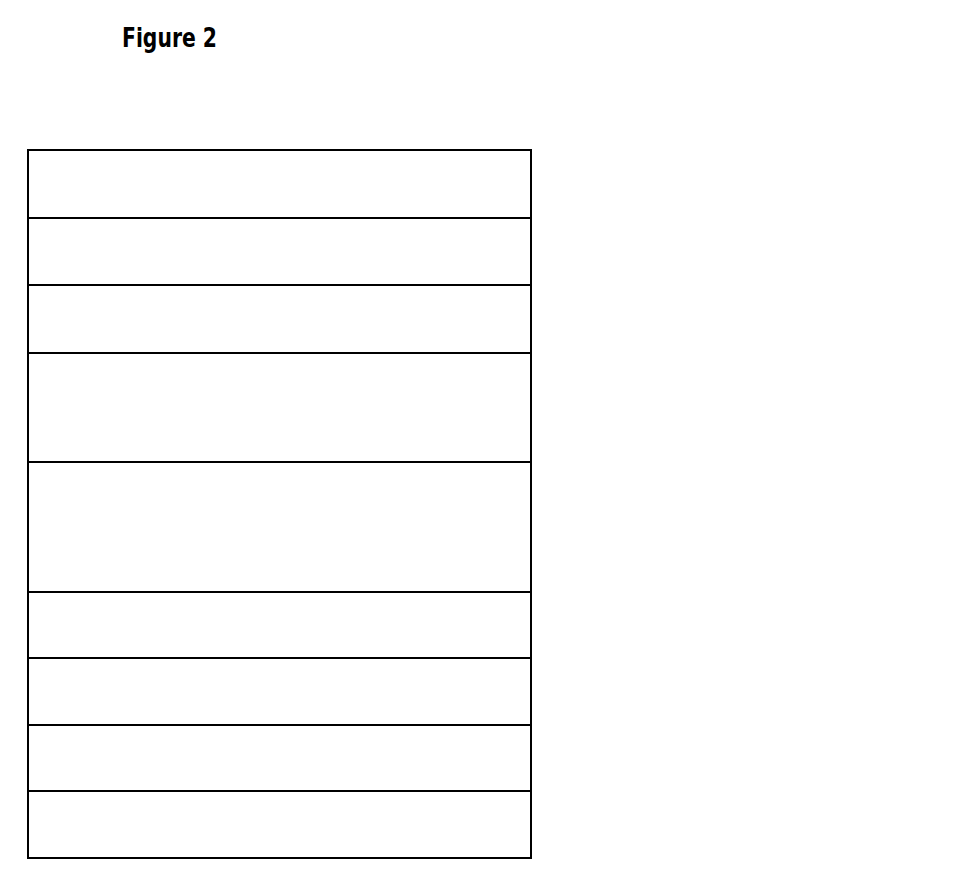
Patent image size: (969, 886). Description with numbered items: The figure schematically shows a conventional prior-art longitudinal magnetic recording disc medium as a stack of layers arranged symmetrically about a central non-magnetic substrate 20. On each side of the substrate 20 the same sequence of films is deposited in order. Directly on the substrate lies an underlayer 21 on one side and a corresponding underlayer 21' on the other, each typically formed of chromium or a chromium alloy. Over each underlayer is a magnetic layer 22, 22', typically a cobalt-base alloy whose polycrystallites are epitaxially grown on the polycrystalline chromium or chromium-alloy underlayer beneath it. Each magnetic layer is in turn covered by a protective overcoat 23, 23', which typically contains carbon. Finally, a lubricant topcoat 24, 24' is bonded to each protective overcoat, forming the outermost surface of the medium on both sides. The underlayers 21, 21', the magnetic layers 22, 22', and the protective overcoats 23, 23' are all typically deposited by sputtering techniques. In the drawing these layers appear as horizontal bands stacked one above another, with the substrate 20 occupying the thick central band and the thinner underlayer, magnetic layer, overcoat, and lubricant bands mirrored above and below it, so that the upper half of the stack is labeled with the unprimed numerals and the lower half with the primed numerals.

The lubricant topcoat 24 is at (416, 184).
The protective overcoat 23 is at (414, 251).
The magnetic layer 22 is at (450, 319).
The underlayer 21 is at (425, 407).
The non-magnetic substrate 20 is at (622, 539).
The underlayer 21' is at (430, 625).
The magnetic layer 22' is at (455, 691).
The protective overcoat 23' is at (419, 758).
The lubricant topcoat 24' is at (421, 824).